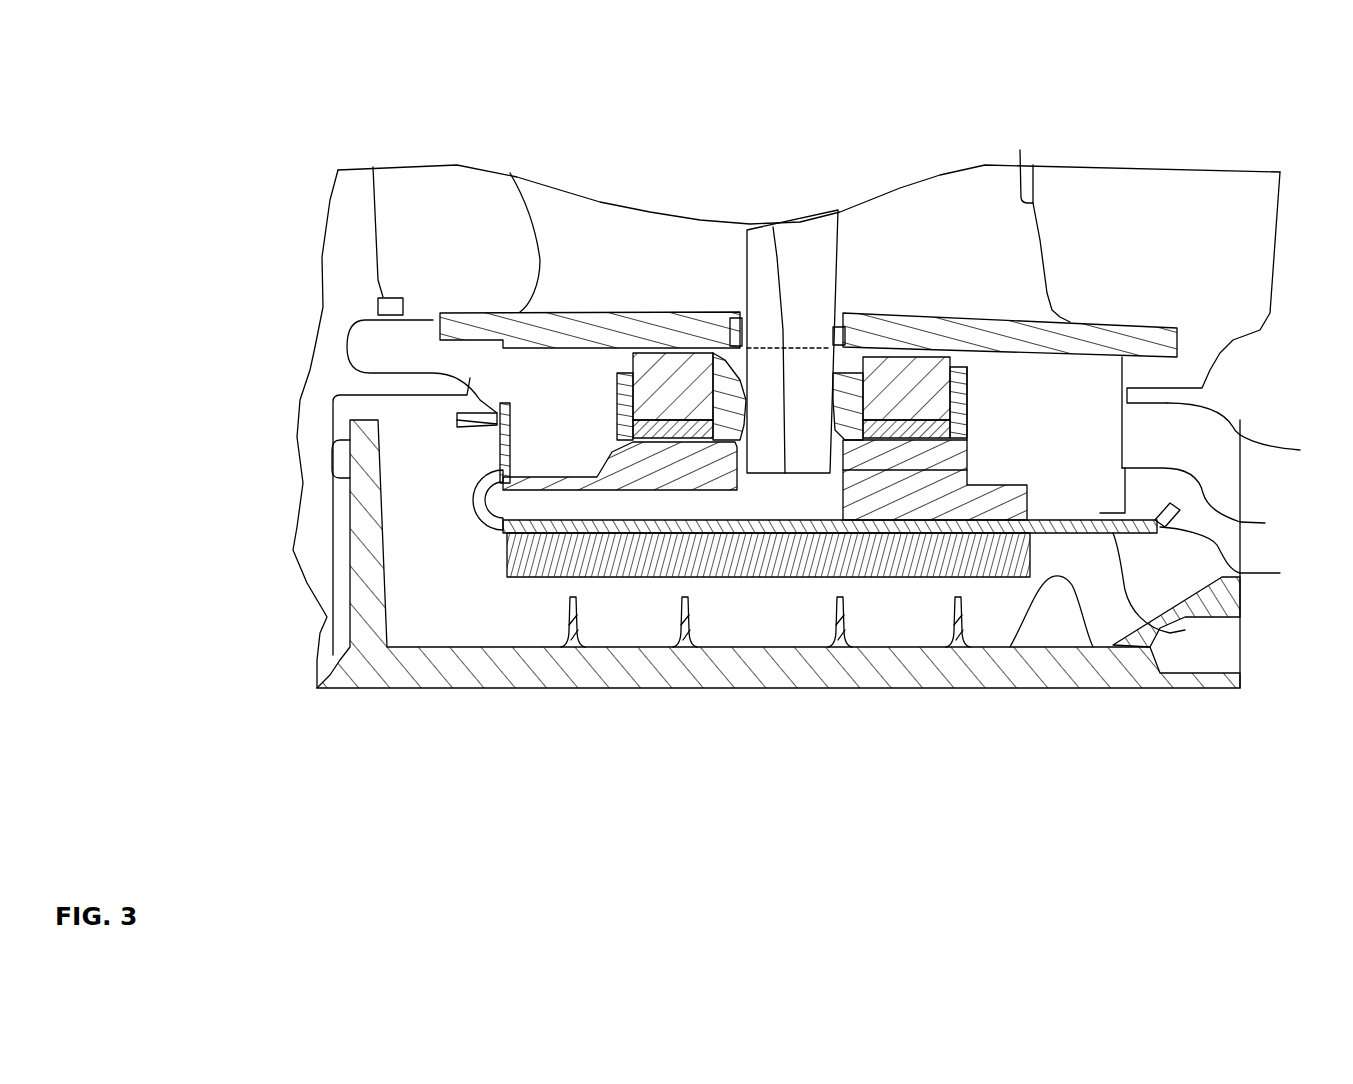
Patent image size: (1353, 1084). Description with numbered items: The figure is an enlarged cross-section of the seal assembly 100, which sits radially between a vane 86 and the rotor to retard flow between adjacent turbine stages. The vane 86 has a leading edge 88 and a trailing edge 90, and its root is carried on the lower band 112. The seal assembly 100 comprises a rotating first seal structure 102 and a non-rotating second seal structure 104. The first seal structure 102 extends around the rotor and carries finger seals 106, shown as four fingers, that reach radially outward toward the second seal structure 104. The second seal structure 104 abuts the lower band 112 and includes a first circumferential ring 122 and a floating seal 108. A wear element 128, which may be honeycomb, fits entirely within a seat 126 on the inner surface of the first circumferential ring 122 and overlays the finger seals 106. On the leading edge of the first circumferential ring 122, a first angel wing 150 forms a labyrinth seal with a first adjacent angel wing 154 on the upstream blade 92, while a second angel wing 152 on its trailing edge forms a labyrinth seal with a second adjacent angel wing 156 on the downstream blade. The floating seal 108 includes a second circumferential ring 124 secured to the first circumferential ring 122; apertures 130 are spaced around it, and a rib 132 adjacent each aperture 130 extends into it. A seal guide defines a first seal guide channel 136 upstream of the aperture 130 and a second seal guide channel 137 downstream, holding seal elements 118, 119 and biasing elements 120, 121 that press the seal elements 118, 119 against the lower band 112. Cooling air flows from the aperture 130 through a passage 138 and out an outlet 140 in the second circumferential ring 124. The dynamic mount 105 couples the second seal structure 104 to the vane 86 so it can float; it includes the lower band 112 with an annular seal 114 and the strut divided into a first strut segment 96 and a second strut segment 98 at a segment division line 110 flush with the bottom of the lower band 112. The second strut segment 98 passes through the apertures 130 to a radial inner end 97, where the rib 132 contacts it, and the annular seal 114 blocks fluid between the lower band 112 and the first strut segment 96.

The seal assembly 100 is at (130, 123).
The leading edge 88 is at (530, 230).
The trailing edge 90 is at (1020, 165).
The upstream blade 92 is at (395, 427).
The vane 86 is at (1108, 276).
The first strut segment 96 is at (788, 223).
The radial inner end 97 is at (773, 227).
The second strut segment 98 is at (805, 409).
The dynamic mount 105 is at (617, 110).
The segment division line 110 is at (788, 330).
The lower band 112 is at (643, 312).
The annular seal 114 is at (737, 318).
The seal element 118 is at (967, 367).
The seal element 119 is at (520, 312).
The biasing element 120 is at (967, 428).
The biasing element 121 is at (617, 373).
The first circumferential ring 122 is at (1183, 617).
The second circumferential ring 124 is at (1027, 493).
The seat 126 is at (1240, 688).
The wear element 128 is at (768, 555).
The aperture 130 is at (967, 470).
The rib 132 is at (683, 350).
The first seal guide channel 136 is at (967, 410).
The second seal guide channel 137 is at (500, 346).
The passage 138 is at (636, 486).
The outlet 140 is at (490, 520).
The first angel wing 150 is at (457, 420).
The second angel wing 152 is at (1218, 580).
The first adjacent angel wing 154 is at (470, 378).
The second adjacent angel wing 156 is at (1255, 545).
The first seal structure 102 is at (507, 740).
The second seal structure 104 is at (438, 467).
The finger seals 106 is at (532, 726).
The floating seal 108 is at (1143, 447).